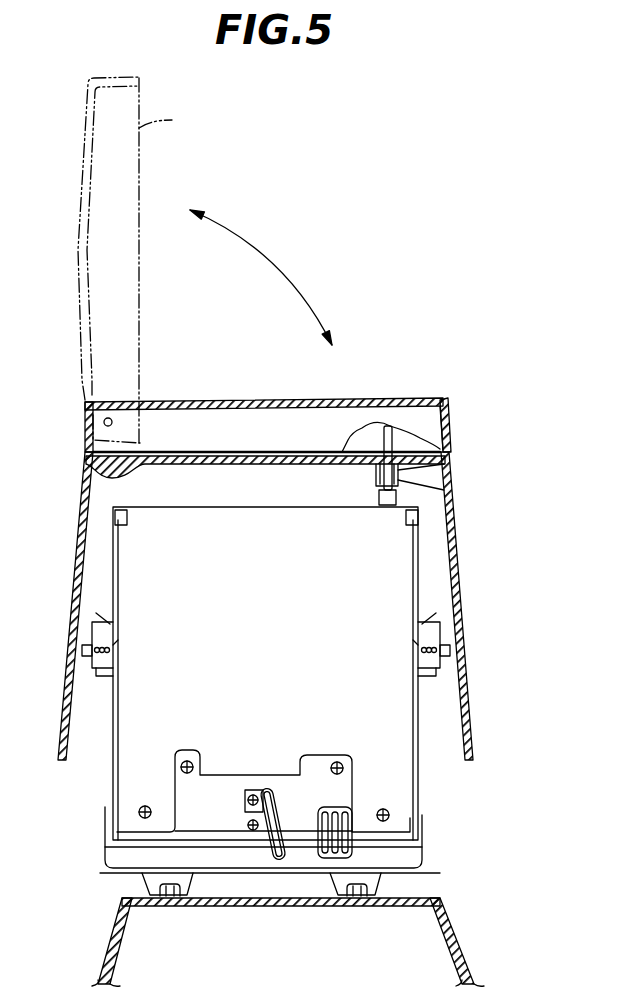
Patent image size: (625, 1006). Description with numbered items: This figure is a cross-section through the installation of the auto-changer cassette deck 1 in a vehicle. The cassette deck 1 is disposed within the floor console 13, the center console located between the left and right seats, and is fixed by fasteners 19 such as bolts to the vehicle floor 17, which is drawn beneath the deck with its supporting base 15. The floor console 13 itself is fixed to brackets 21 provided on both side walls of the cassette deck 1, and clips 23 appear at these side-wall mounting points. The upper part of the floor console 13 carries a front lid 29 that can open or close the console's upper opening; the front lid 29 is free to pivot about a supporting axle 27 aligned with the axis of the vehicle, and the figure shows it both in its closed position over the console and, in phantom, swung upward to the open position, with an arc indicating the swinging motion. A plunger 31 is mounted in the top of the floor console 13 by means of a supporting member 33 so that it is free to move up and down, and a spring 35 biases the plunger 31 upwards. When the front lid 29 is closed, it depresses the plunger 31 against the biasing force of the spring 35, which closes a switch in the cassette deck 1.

The auto-changer cassette deck 1 is at (387, 592).
The floor console 13 is at (463, 690).
The tray / bottom chassis 15 is at (108, 873).
The vehicle floor 17 is at (264, 907).
The fasteners 19 is at (169, 899).
The brackets 21 is at (96, 676).
The clip / fastener 23 is at (92, 636).
The supporting axle 27 is at (104, 422).
The front lid 29 is at (353, 399).
The plunger 31 is at (438, 447).
The supporting member 33 is at (397, 494).
The spring 35 is at (444, 470).